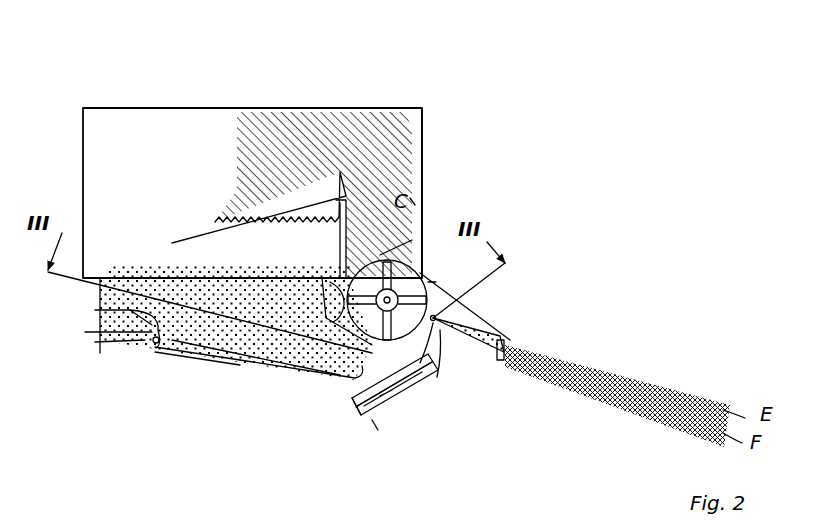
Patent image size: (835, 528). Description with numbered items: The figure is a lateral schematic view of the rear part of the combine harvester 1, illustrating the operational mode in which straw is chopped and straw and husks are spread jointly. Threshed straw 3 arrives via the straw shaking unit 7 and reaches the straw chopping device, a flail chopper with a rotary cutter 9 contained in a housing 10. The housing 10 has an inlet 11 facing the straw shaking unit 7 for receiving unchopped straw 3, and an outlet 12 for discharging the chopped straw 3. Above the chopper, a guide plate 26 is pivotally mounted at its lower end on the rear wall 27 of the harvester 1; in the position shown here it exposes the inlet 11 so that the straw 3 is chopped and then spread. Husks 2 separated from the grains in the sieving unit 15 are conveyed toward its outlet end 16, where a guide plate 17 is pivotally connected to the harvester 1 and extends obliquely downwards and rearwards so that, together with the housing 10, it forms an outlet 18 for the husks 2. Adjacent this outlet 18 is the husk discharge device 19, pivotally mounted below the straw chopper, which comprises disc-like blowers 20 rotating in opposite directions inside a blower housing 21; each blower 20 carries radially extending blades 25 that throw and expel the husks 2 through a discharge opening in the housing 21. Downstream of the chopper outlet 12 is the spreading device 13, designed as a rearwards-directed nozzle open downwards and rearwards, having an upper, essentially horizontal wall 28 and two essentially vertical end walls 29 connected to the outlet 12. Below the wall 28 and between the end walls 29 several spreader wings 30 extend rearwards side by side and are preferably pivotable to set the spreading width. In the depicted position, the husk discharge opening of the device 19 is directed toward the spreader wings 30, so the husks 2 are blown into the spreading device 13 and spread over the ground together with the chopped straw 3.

The combine harvester 1 is at (143, 104).
The husks 2 is at (155, 290).
The straw 3 is at (237, 155).
The straw shaking unit 7 is at (216, 218).
The rotary cutter 9 is at (432, 277).
The housing 10 is at (485, 328).
The inlet 11 is at (403, 242).
The outlet 12 is at (450, 340).
The spreading device 13 is at (503, 343).
The sieving unit 15 is at (118, 338).
The outlet end 16 is at (160, 350).
The guide plate 17 is at (222, 362).
The outlet 18 is at (360, 380).
The husk discharge device 19 is at (375, 432).
The disc-like blowers 20 is at (427, 380).
The blower housing 21 is at (367, 437).
The radially extending blades 25 is at (360, 417).
The guide plate 26 is at (422, 170).
The rear wall 27 is at (422, 118).
The upper wall 28 is at (505, 330).
The end walls 29 is at (467, 380).
The spreader wings 30 is at (510, 346).